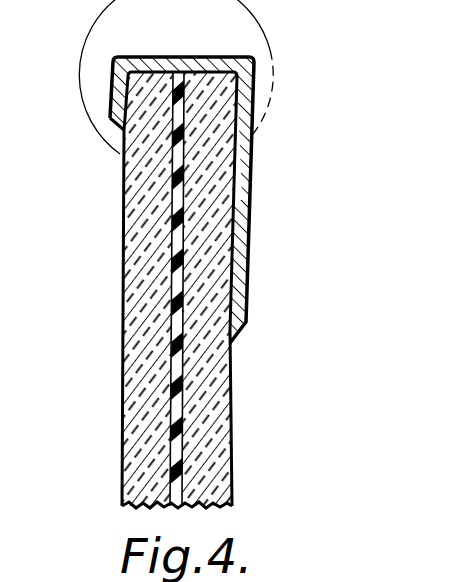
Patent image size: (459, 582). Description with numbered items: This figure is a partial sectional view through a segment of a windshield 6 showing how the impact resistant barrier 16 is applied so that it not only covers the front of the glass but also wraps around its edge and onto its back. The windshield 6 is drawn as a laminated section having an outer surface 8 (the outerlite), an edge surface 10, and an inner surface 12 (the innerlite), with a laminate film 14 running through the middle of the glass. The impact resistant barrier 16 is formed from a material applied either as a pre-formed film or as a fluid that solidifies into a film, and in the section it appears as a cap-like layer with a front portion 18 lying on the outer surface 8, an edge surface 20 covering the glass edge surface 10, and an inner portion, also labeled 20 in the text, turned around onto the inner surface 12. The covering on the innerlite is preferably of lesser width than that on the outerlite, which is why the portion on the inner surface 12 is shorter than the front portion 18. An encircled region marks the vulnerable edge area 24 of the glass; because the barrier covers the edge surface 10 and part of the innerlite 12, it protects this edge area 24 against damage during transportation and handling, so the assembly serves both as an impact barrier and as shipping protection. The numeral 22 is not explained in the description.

The windshield 6 is at (172, 290).
The outer surface 8 is at (231, 401).
The edge surface 10 is at (177, 175).
The inner surface 12 is at (121, 199).
The laminate film 14 is at (171, 289).
The impact resistant barrier 16 is at (247, 281).
The front portion 18 is at (249, 191).
The edge surface 20 is at (227, 55).
The flange 22 is at (110, 108).
The edge area 24 is at (272, 43).